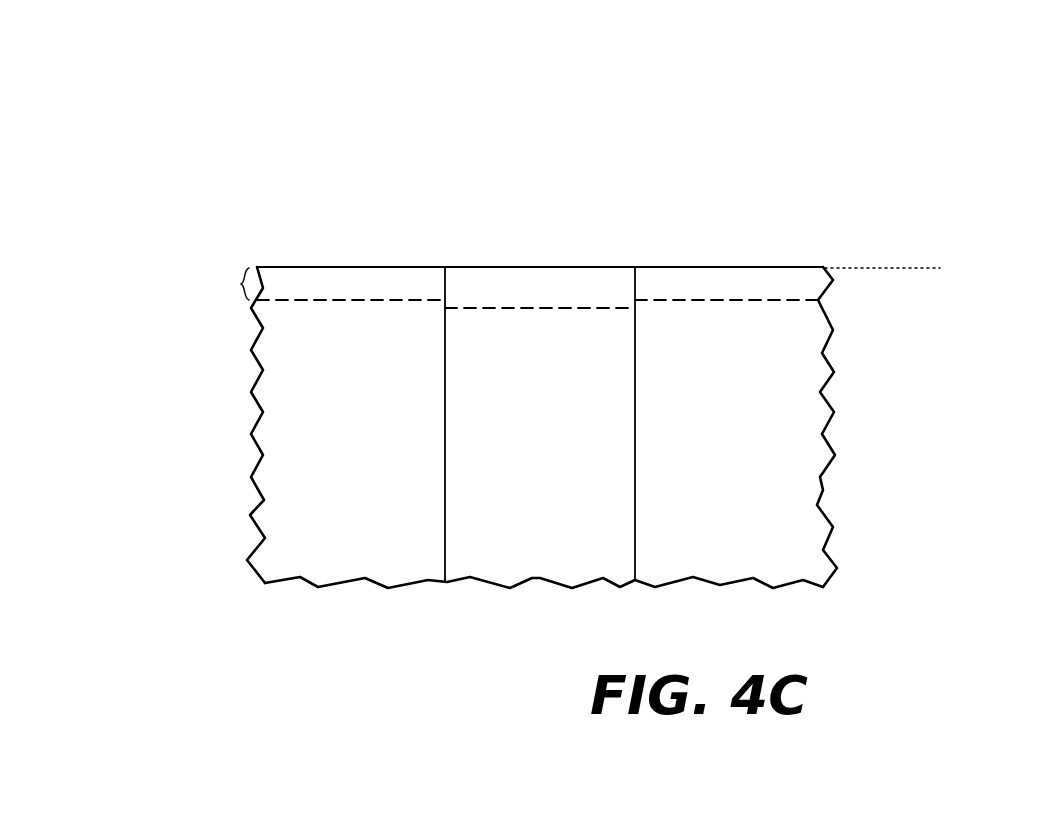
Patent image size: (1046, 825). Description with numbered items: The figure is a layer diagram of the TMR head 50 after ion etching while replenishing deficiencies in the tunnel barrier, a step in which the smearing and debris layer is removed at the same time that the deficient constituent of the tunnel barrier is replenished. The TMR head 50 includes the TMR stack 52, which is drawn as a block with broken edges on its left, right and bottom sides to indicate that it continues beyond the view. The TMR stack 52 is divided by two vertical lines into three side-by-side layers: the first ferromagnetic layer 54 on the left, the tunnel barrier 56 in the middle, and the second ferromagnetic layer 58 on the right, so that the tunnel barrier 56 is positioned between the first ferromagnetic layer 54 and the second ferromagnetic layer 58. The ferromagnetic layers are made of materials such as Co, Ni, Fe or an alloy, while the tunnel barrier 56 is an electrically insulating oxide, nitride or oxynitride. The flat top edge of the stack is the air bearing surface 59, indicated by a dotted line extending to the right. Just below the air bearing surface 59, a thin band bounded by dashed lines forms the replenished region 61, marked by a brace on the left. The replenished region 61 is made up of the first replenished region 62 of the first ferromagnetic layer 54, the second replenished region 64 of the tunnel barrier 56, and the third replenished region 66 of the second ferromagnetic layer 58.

The TMR head 50 is at (664, 112).
The TMR stack 52 is at (218, 368).
The first ferromagnetic layer 54 is at (346, 425).
The tunnel barrier 56 is at (581, 423).
The second ferromagnetic layer 58 is at (777, 427).
The air bearing surface 59 is at (882, 251).
The replenished region 61 is at (152, 271).
The first replenished region 62 is at (351, 284).
The second replenished region 64 is at (540, 288).
The third replenished region 66 is at (727, 284).